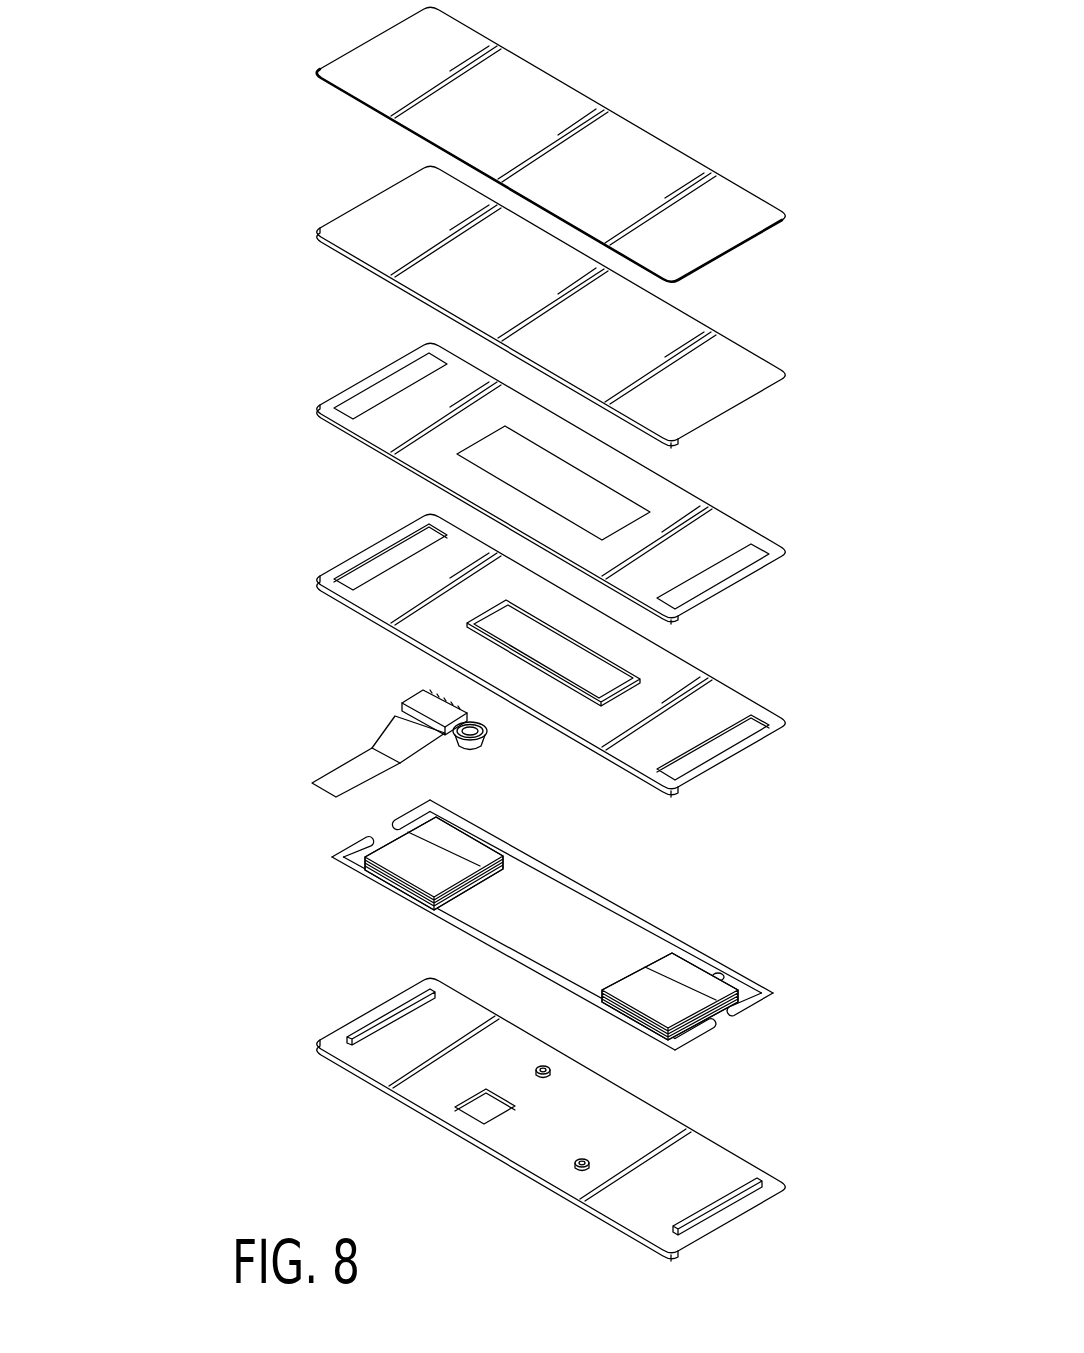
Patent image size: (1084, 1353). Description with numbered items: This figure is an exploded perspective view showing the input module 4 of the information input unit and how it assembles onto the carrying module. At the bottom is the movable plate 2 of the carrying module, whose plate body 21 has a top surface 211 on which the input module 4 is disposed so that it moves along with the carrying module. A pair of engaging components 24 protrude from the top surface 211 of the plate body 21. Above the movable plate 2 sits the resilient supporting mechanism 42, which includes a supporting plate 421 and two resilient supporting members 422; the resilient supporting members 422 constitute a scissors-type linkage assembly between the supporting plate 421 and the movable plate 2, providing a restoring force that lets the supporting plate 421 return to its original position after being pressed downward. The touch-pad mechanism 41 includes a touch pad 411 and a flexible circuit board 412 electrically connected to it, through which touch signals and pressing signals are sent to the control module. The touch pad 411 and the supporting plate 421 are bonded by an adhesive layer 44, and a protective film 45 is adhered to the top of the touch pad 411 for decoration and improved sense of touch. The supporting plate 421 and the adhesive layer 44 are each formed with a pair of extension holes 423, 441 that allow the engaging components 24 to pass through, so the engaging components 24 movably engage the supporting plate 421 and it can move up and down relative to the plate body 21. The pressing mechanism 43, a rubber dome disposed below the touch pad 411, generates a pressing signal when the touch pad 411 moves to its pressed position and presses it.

The movable plate 2 is at (687, 1098).
The plate body 21 is at (760, 1212).
The top surface 211 is at (595, 1110).
The engaging components 24 is at (390, 1013).
The input module 4 is at (236, 356).
The touch-pad mechanism 41 is at (748, 340).
The touch pad 411 is at (720, 393).
The flexible circuit board 412 is at (395, 737).
The resilient supporting mechanism 42 is at (797, 731).
The supporting plate 421 is at (643, 747).
The resilient supporting members 422 is at (442, 842).
The extension holes 423 is at (375, 560).
The pressing mechanism 43 is at (478, 748).
The adhesive layer 44 is at (718, 530).
The extension holes 441 is at (375, 393).
The protective film 45 is at (613, 135).